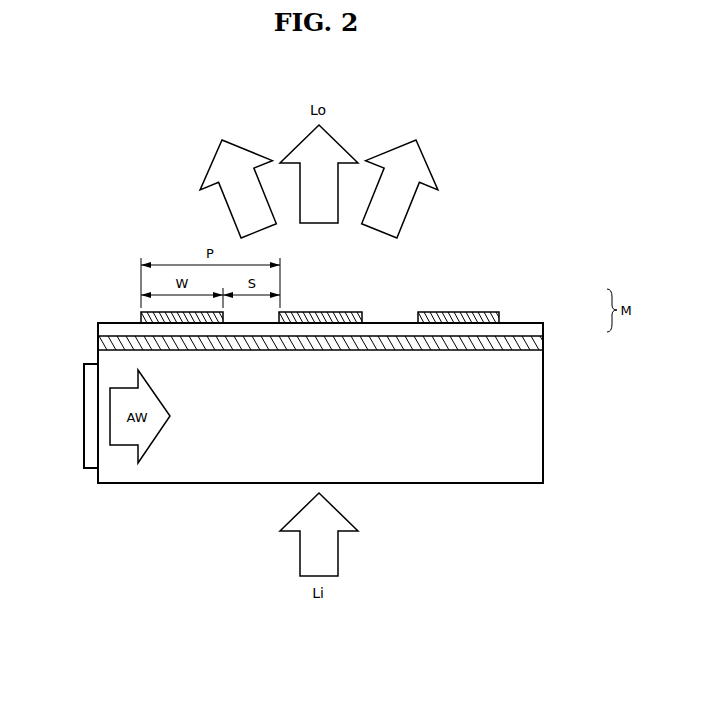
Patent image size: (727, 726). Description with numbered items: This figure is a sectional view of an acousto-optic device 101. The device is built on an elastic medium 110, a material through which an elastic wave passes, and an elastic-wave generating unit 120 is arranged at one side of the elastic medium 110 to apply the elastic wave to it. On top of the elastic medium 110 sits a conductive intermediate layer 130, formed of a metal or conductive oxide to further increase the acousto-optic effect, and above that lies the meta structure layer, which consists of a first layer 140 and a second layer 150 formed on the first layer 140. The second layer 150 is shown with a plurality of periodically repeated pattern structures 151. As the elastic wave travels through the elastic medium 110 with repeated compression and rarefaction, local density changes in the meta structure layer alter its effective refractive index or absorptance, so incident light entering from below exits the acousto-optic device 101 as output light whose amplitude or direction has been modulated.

The acousto-optic device 101 is at (535, 252).
The elastic medium 110 is at (532, 413).
The elastic-wave generating unit 120 is at (86, 452).
The intermediate layer 130 is at (543, 345).
The first layer 140 is at (543, 329).
The second layer 150 is at (369, 299).
The pattern structures 151 is at (460, 312).